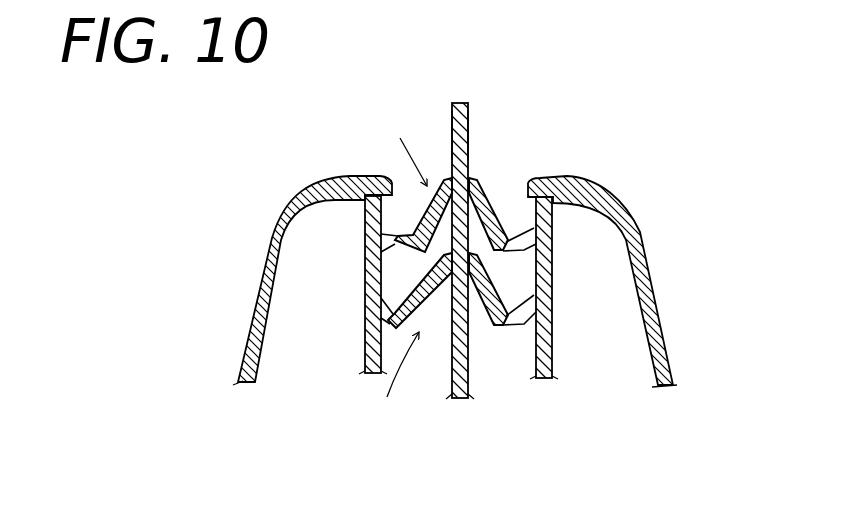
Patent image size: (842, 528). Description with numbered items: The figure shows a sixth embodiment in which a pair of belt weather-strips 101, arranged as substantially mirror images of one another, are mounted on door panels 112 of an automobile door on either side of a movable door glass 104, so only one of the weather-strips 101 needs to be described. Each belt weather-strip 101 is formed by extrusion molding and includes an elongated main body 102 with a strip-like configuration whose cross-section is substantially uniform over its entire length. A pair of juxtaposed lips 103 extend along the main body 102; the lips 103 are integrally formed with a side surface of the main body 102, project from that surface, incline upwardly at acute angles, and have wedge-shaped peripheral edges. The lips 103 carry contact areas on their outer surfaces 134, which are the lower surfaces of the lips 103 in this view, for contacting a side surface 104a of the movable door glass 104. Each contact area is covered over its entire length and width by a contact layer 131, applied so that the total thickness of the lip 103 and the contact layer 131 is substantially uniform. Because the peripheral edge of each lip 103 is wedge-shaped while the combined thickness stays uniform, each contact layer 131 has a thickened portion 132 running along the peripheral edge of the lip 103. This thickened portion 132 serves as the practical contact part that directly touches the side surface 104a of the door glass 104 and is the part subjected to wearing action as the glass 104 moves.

The belt weather-strip 101 is at (375, 183).
The main body 102 is at (380, 203).
The lip 103 is at (386, 271).
The movable door glass 104 is at (468, 113).
The side surface of the movable door glass 104a is at (451, 160).
The door panel 112 is at (366, 360).
The contact layer 131 is at (442, 262).
The thickened portion 132 is at (447, 172).
The outer surface of the lip 134 is at (403, 214).